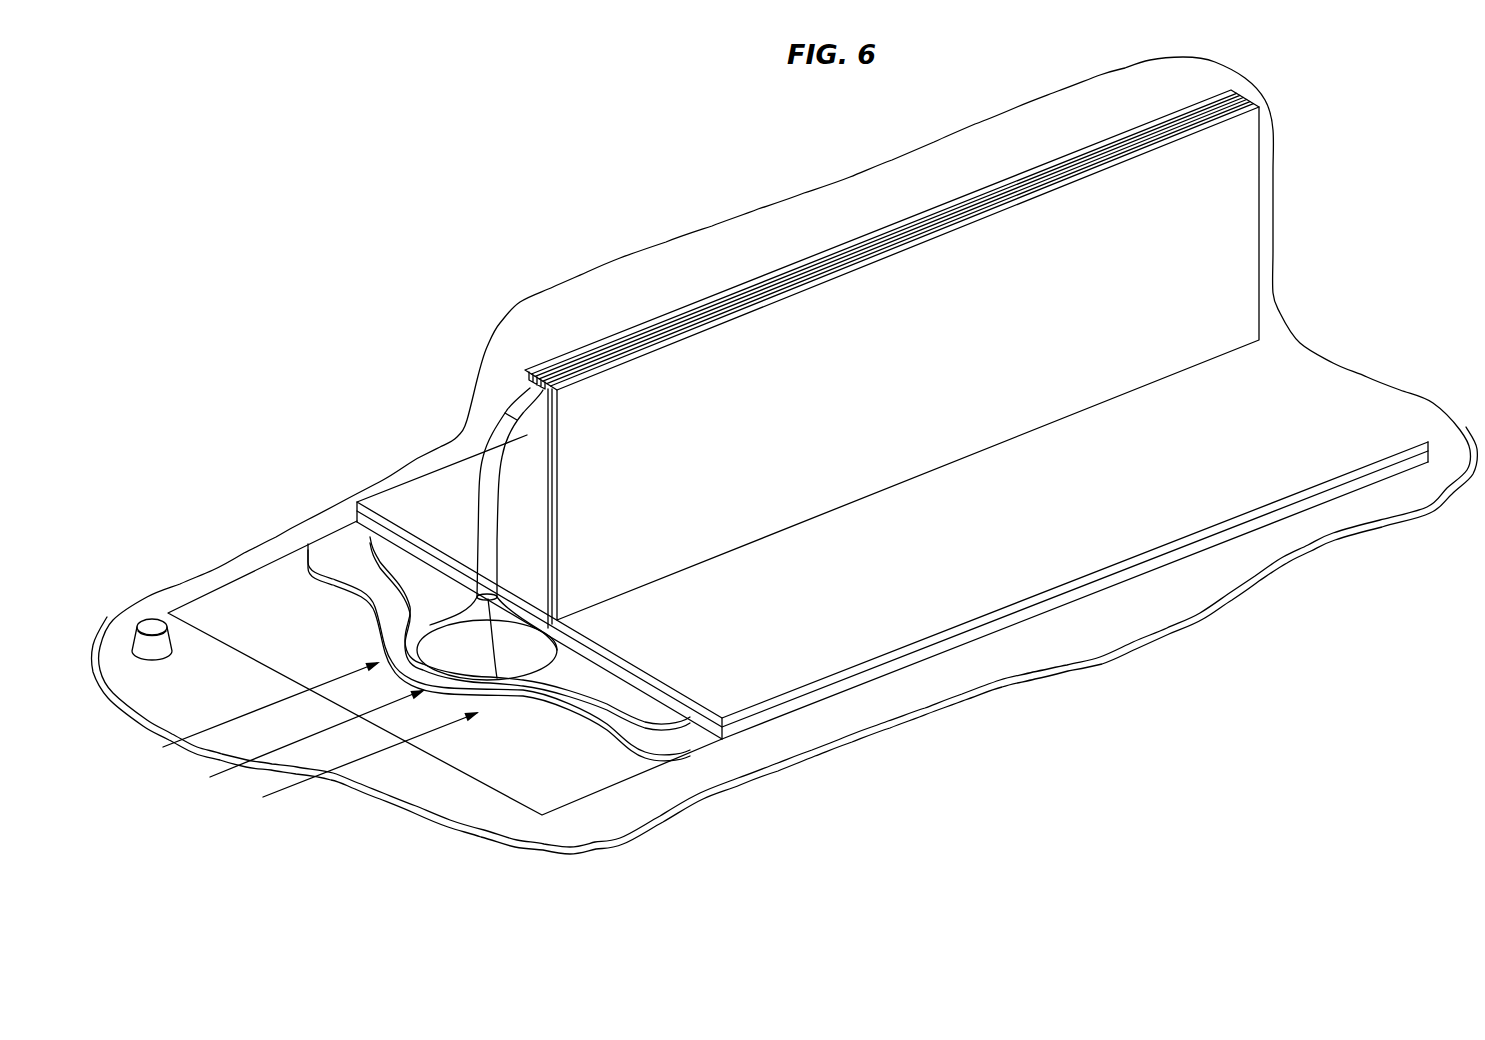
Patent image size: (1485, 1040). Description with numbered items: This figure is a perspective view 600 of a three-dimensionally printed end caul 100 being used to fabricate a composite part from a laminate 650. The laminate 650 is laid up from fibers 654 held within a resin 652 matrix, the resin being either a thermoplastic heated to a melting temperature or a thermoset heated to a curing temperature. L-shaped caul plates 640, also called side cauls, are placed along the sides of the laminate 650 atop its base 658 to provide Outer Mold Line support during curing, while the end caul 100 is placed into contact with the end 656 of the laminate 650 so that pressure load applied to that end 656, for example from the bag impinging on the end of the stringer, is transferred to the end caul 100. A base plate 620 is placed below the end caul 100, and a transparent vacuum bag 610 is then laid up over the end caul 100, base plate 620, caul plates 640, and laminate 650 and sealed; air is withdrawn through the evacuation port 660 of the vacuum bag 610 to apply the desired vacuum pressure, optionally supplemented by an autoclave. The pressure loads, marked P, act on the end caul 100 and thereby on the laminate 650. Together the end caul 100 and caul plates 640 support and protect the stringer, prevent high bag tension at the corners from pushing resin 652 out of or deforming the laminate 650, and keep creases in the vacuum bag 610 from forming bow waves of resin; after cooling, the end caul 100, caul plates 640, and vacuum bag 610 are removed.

The end caul 100 is at (612, 682).
The perspective view of end caul in use 600 is at (1245, 666).
The vacuum bag 610 is at (1330, 350).
The base plate 620 is at (237, 654).
The caul plates 640 is at (736, 430).
The laminate 650 is at (889, 341).
The resin 652 is at (664, 320).
The fibers 654 is at (748, 278).
The end 656 is at (524, 381).
The base 658 is at (1445, 430).
The evacuation port 660 is at (147, 621).